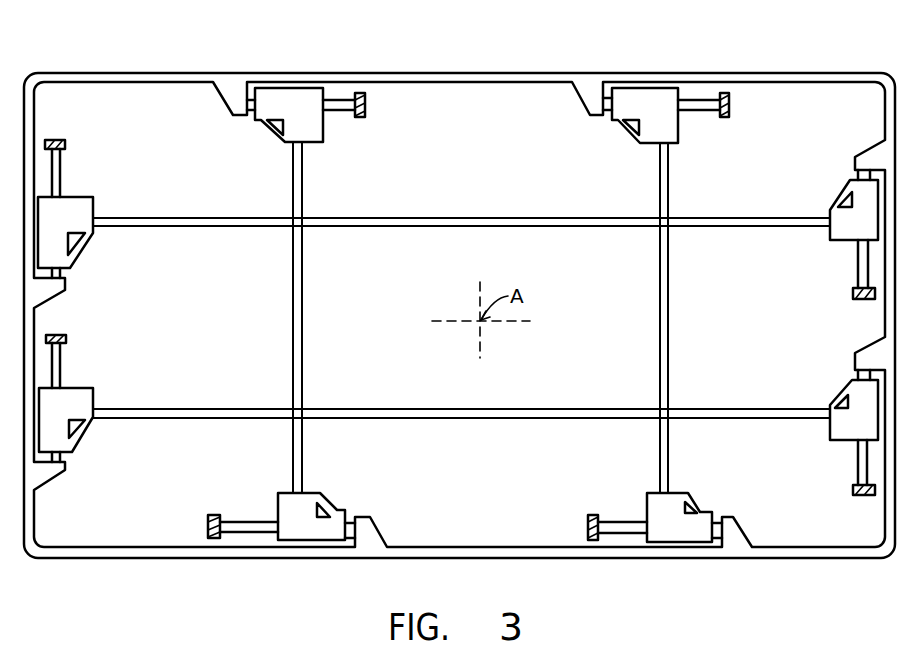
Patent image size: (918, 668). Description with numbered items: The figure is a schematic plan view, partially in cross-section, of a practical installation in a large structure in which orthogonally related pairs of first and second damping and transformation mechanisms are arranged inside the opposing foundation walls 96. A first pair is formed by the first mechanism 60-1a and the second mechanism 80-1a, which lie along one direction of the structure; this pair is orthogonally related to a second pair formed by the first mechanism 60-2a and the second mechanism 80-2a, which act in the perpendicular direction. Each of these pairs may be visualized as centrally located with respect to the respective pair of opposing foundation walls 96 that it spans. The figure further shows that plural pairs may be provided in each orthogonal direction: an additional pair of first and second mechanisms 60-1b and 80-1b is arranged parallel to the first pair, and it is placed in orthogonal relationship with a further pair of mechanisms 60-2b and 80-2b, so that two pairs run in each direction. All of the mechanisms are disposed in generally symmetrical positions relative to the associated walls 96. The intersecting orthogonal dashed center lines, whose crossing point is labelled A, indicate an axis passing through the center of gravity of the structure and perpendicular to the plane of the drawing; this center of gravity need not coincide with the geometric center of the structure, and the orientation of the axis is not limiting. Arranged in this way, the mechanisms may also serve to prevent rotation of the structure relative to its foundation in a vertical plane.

The foundation walls 96 is at (470, 73).
The second damping and transformation mechanism 80-1a is at (323, 132).
The second damping and transformation mechanism 80-1b is at (678, 132).
The second damping and transformation mechanism 80-2a is at (838, 207).
The second damping and transformation mechanism 80-2b is at (835, 401).
The first damping and transformation mechanism 60-1a is at (278, 496).
The first damping and transformation mechanism 60-1b is at (647, 497).
The first damping and transformation mechanism 60-2a is at (87, 197).
The first damping and transformation mechanism 60-2b is at (87, 388).